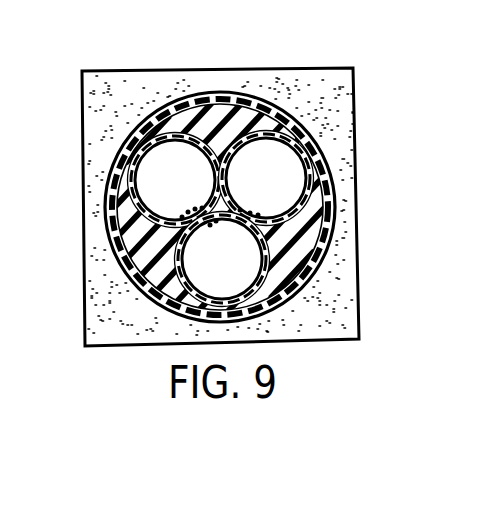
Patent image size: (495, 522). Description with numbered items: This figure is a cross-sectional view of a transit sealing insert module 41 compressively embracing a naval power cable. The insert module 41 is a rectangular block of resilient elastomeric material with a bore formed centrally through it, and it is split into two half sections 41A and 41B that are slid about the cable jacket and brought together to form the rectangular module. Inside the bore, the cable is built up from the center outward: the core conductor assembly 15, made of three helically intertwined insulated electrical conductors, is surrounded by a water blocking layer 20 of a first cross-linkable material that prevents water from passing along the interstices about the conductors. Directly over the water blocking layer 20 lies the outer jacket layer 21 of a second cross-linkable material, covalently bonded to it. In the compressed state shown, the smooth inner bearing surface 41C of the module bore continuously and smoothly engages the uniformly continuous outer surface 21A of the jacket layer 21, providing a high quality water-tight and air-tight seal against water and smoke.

The core conductor assembly 15 is at (113, 247).
The water blocking layer 20 is at (320, 236).
The outer jacket layer 21 is at (271, 105).
The outer surface of jacket layer 21A is at (160, 110).
The transit sealing insert module 41 is at (370, 171).
The insert module half section 41A is at (342, 101).
The insert module half section 41B is at (340, 292).
The inner bearing surface 41C is at (217, 101).